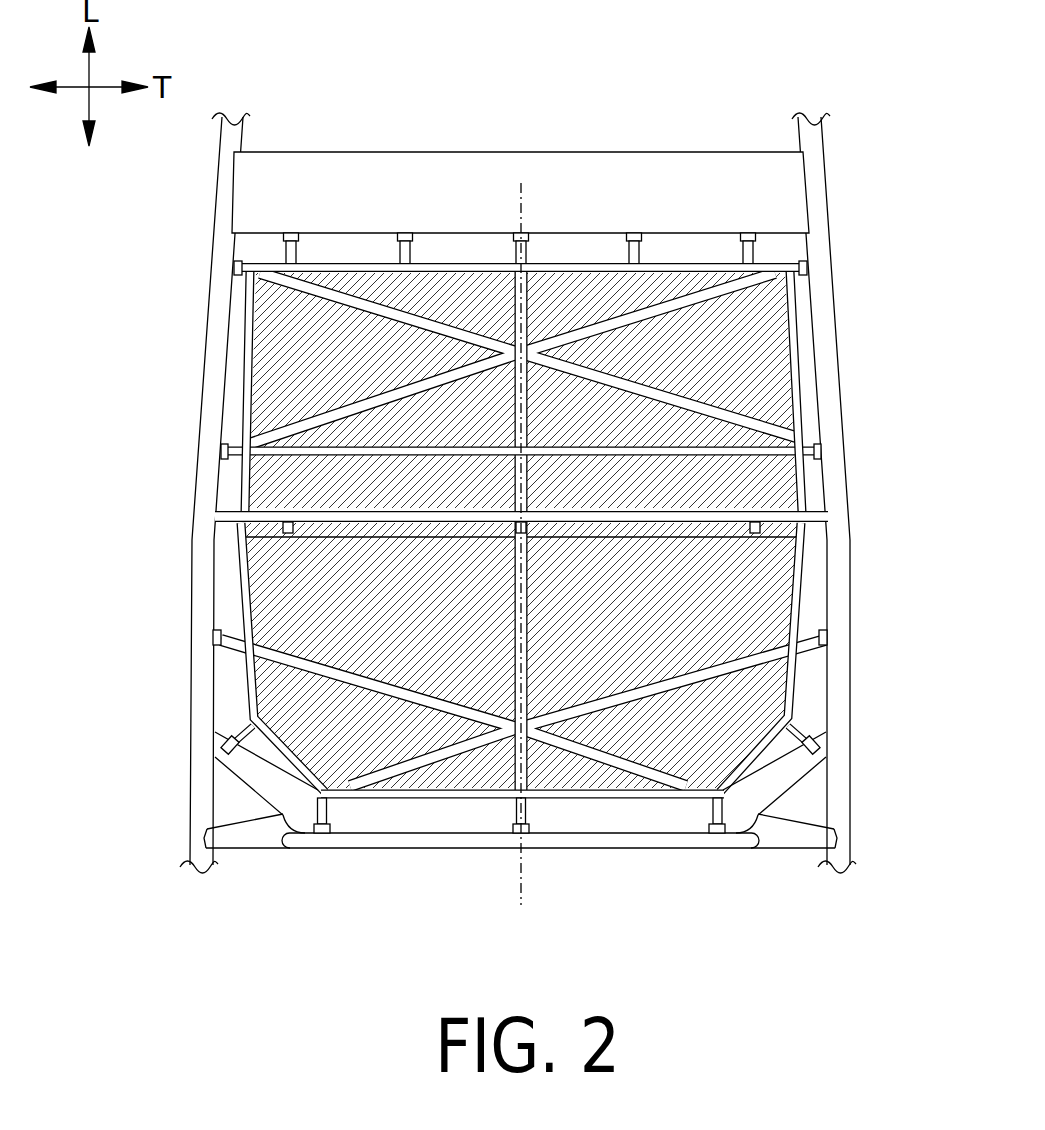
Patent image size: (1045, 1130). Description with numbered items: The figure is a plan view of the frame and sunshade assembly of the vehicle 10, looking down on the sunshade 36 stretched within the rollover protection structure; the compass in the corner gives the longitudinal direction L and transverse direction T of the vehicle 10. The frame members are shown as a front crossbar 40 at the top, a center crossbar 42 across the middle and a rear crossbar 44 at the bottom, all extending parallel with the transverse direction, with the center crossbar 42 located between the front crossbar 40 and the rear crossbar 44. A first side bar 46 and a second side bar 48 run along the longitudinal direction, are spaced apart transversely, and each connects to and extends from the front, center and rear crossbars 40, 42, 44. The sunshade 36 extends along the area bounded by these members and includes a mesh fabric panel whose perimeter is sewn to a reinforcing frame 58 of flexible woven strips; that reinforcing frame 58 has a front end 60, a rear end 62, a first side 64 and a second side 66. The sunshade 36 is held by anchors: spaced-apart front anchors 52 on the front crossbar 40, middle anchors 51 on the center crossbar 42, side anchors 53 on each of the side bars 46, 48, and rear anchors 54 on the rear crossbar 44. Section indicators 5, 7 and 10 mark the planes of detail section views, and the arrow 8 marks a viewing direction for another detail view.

The section line 5- 5 is at (495, 472).
The section line 7- 7 is at (495, 201).
The view direction arrow 8 is at (205, 288).
The vehicle 10 is at (495, 803).
The sunshade 36 is at (520, 818).
The front crossbar 40 is at (519, 151).
The center crossbar 42 is at (818, 519).
The rear crossbar 44 is at (625, 847).
The first side bar 46 is at (206, 357).
The second side bar 48 is at (839, 362).
The middle anchors 51 is at (286, 523).
The front anchors 52 is at (286, 254).
The side anchors 53 is at (808, 270).
The rear anchors 54 is at (224, 738).
The reinforcing frame 58 is at (527, 543).
The front end 60 is at (703, 272).
The rear end 62 is at (355, 799).
The first side 64 is at (245, 404).
The second side 66 is at (806, 575).